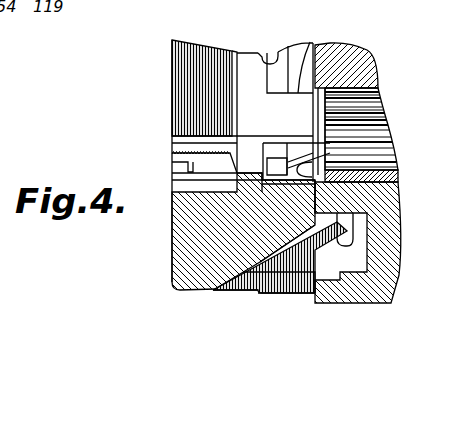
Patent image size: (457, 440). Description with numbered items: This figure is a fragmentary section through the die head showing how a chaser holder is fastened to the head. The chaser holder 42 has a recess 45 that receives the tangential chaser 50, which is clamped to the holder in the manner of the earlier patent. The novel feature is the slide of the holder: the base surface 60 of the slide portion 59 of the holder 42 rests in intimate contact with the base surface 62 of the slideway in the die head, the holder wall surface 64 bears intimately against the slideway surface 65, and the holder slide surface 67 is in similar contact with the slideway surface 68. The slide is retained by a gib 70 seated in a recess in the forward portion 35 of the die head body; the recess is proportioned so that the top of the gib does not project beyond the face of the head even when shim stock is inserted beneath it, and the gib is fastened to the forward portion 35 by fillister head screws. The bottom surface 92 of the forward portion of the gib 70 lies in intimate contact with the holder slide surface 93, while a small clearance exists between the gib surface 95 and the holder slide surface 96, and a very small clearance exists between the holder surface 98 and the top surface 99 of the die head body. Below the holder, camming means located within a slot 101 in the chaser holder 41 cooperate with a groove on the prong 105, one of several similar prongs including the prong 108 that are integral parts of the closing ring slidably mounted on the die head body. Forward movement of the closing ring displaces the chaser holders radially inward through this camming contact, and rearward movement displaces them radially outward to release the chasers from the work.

The forward portion of die head body 35 is at (270, 297).
The chaser holder 41 is at (176, 236).
The chaser holder 42 is at (283, 98).
The recess 45 is at (175, 145).
The tangential chaser 50 is at (190, 83).
The slide portion 59 is at (293, 137).
The base surface 60 is at (337, 107).
The base surface of slideway 62 is at (327, 120).
The wall surface 64 is at (316, 56).
The slideway surface 65 is at (275, 132).
The holder slide surface 67 is at (389, 177).
The slideway surface 68 is at (323, 156).
The gib 70 is at (280, 158).
The bottom surface of gib forward portion 92 is at (315, 146).
The holder slide surface 93 is at (249, 182).
The gib surface 95 is at (279, 165).
The holder slide surface 96 is at (264, 168).
The holder surface 98 is at (279, 53).
The top surface of die head body 99 is at (262, 58).
The slot 101 is at (303, 282).
The prong 105 is at (283, 236).
The prong 108 is at (394, 249).